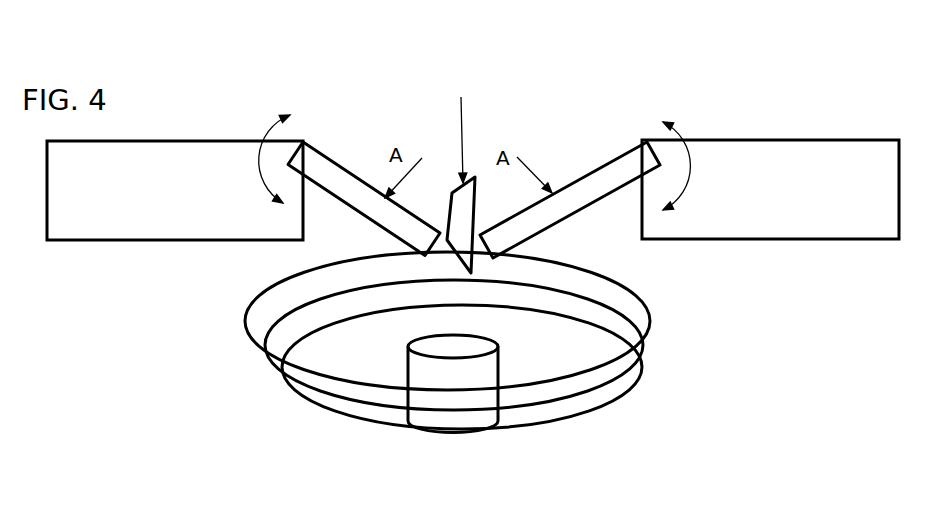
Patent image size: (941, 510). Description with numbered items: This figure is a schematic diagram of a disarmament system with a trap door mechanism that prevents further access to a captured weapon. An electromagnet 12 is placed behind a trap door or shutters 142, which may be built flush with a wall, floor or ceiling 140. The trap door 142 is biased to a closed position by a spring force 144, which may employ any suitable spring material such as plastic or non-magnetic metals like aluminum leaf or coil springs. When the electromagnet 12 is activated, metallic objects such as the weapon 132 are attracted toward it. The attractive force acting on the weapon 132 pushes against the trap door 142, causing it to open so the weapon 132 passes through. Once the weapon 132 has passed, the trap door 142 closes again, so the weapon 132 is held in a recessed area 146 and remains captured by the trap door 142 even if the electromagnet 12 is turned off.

The electromagnet 12 is at (660, 350).
The weapon 132 is at (453, 190).
The wall, floor or ceiling 140 is at (200, 147).
The trap door 142 is at (583, 177).
The spring force 144 is at (292, 114).
The recessed area 146 is at (598, 240).